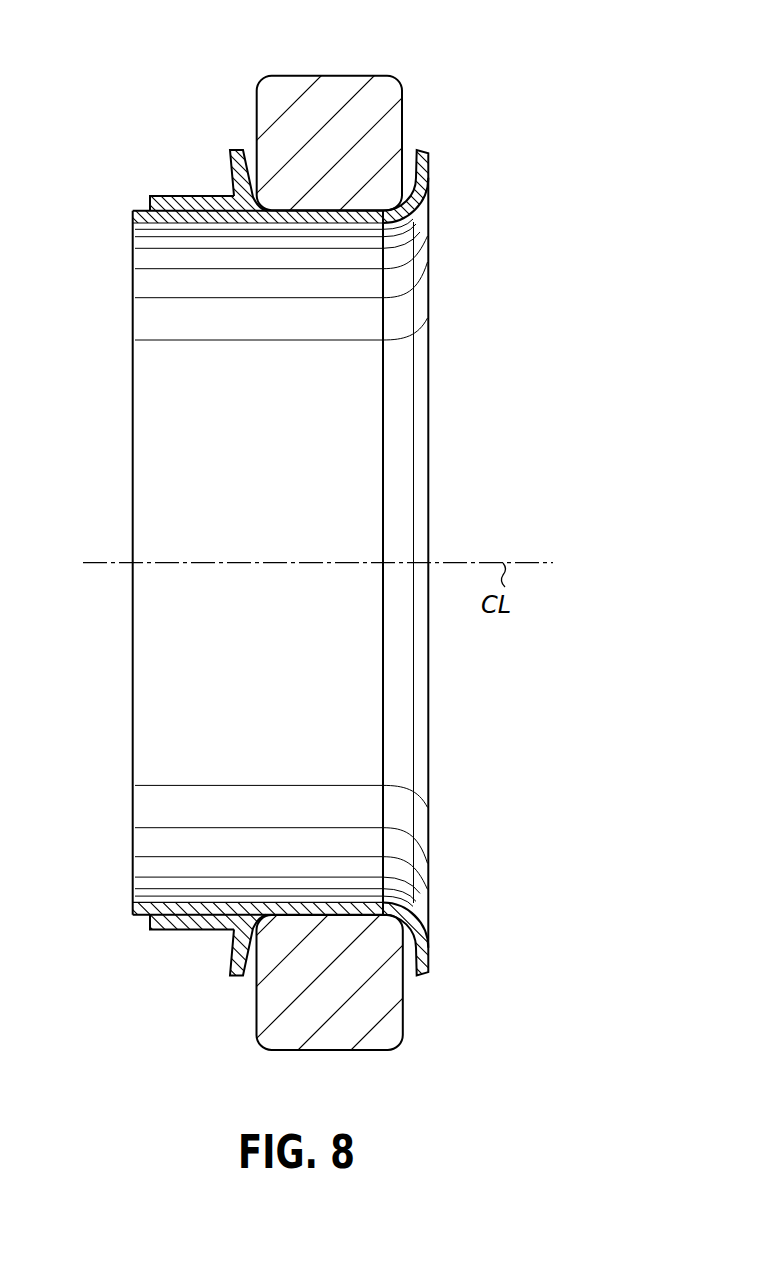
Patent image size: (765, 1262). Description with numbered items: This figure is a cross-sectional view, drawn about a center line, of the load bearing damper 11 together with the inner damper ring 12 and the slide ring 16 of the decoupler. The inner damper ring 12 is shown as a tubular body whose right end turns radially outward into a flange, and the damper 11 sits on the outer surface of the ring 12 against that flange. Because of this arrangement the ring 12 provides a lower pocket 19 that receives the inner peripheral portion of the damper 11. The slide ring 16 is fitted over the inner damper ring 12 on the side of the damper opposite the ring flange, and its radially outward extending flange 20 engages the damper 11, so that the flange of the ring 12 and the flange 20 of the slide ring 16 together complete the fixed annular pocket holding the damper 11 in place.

The load bearing damper 11 is at (266, 74).
The inner damper ring 12 is at (134, 209).
The slide ring 16 is at (166, 194).
The lower pocket 19 is at (304, 206).
The radially outward extending flange 20 is at (238, 163).